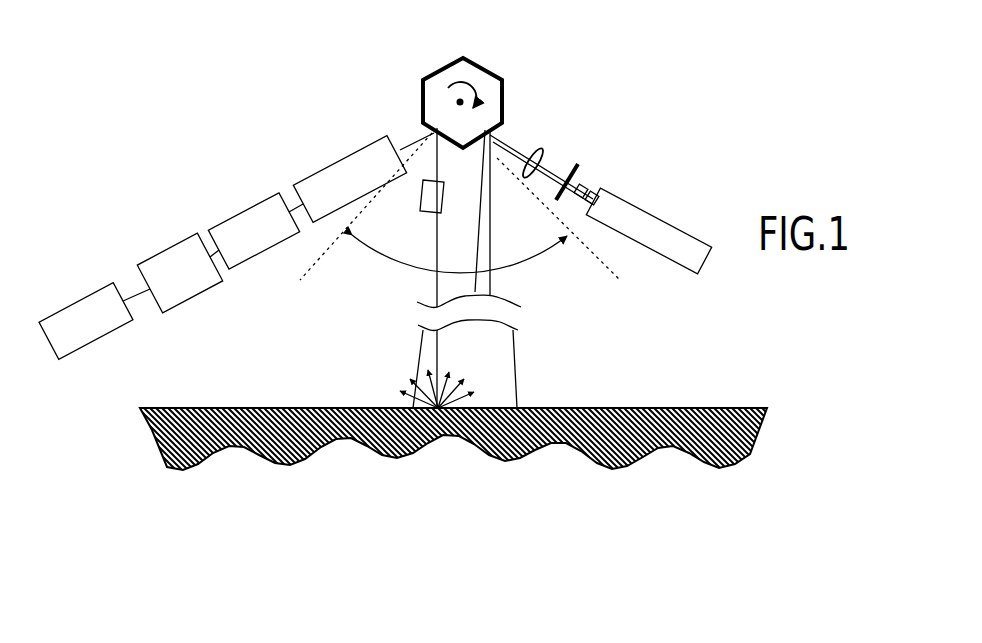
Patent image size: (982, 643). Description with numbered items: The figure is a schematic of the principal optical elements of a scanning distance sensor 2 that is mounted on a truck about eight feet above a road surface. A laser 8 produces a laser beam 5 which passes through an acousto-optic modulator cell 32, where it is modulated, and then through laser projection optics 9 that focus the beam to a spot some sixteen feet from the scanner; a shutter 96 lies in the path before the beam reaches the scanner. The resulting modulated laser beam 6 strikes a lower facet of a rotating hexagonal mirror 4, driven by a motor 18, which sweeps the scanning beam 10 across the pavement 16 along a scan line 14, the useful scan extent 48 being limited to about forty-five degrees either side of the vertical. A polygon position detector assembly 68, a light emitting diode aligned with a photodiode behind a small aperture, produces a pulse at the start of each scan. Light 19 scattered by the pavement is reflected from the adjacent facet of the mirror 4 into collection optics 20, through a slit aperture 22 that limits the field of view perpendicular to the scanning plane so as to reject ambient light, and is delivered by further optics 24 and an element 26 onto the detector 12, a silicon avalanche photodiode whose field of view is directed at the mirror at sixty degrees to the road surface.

The scanning distance sensor 2 is at (692, 62).
The rotating hexagonal mirror 4 is at (490, 78).
The laser beam 5 is at (132, 292).
The modulated laser beam 6 is at (410, 140).
The laser 8 is at (82, 296).
The laser projection optics 9 is at (263, 200).
The scanning beam 10 is at (485, 229).
The detector 12 is at (646, 204).
The scan line 14 is at (511, 270).
The surface 16 is at (308, 407).
The motor 18 is at (460, 96).
The scattered light 19 is at (420, 351).
The collection optics 20 is at (538, 152).
The slit aperture 22 is at (571, 178).
The optics 24 is at (584, 183).
The aperture 26 is at (596, 192).
The modulator cell 32 is at (180, 243).
The scan extent 48 is at (621, 279).
The polygon position detector assembly 68 is at (423, 210).
The shutter 96 is at (328, 167).